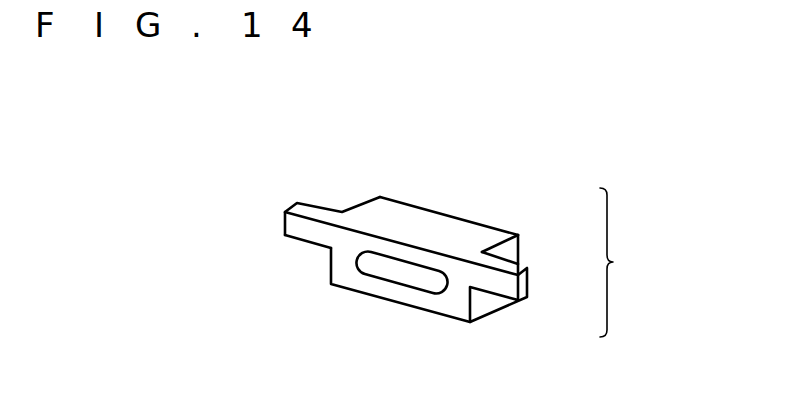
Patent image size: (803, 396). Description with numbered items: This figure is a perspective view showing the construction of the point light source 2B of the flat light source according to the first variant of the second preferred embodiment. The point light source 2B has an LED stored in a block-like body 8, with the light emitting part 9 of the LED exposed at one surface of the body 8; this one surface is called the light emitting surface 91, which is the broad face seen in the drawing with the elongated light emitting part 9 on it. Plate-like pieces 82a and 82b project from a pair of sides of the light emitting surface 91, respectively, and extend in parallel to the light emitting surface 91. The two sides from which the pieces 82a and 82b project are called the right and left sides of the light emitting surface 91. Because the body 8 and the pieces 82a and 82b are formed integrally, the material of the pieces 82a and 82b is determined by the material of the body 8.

The body 8 is at (420, 220).
The plate-like piece 82a is at (502, 262).
The plate-like piece 82b is at (313, 212).
The light emitting part 9 is at (390, 268).
The light emitting surface 91 is at (452, 295).
The point light source 2B is at (628, 262).